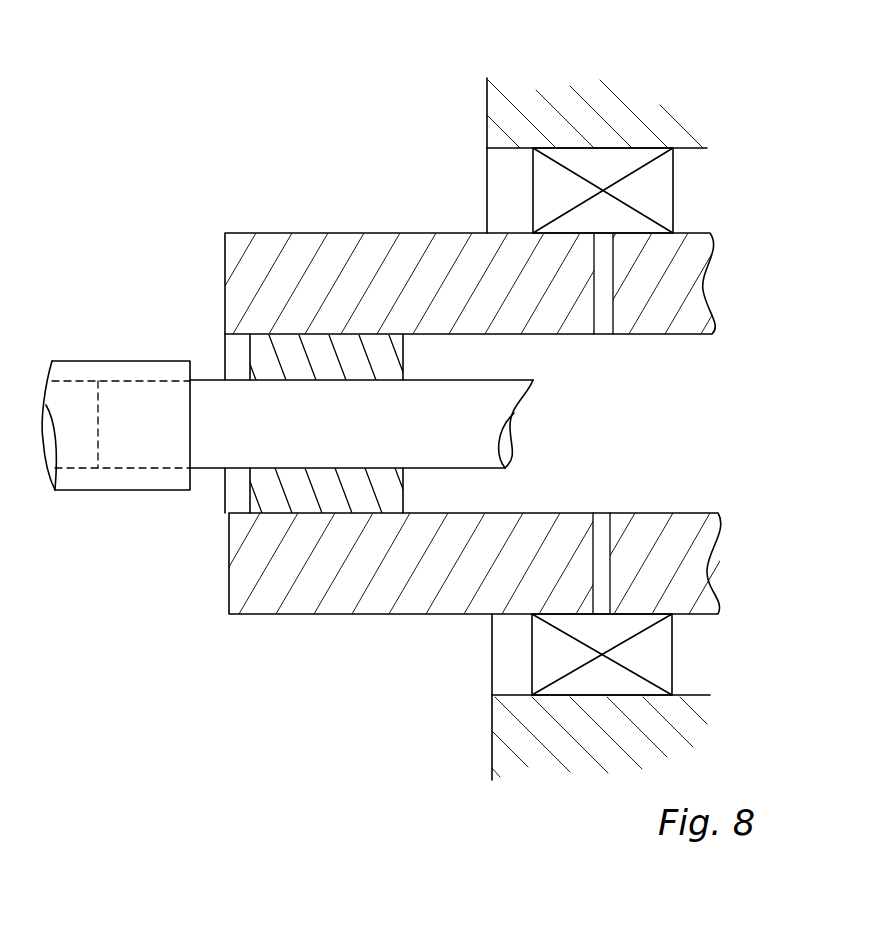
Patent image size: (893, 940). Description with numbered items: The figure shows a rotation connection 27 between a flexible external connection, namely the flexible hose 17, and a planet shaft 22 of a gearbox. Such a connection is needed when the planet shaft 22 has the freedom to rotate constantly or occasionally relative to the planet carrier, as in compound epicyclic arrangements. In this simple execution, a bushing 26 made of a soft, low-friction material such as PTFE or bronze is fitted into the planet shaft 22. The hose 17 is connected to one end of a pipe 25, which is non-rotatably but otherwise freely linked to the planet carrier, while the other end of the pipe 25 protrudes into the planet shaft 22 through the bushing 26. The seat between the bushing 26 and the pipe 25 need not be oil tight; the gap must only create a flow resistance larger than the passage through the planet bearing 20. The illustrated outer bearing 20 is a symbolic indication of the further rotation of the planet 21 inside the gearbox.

The flexible hose 17 is at (123, 370).
The planet bearing 20 is at (585, 167).
The planet 21 is at (515, 117).
The planet shaft 22 is at (405, 273).
The pipe 25 is at (207, 393).
The bushing 26 is at (265, 500).
The rotation connection 27 is at (355, 102).